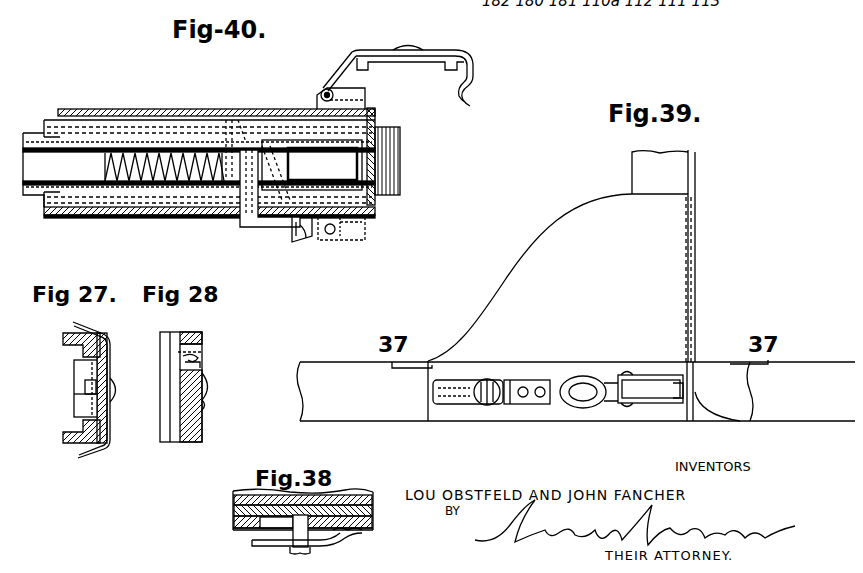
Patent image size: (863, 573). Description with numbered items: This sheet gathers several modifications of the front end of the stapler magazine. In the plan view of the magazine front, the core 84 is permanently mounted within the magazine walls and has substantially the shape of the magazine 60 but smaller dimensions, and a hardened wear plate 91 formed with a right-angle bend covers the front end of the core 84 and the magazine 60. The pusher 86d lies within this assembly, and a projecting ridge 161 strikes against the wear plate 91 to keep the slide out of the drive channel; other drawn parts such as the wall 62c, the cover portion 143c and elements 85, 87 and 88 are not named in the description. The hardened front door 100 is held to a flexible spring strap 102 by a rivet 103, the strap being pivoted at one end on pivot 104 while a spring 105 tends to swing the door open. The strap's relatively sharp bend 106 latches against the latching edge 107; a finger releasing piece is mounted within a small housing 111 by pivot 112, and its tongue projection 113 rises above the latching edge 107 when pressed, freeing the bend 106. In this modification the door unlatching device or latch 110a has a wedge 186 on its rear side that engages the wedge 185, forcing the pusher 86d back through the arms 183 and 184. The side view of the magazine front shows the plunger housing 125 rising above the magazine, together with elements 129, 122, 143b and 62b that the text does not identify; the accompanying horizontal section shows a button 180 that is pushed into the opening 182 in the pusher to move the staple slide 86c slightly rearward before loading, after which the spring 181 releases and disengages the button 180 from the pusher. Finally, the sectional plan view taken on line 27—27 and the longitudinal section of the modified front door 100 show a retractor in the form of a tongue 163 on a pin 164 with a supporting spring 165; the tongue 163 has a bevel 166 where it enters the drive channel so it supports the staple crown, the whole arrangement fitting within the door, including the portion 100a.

In FIG. 40, the core 84 is at (30, 133).
In FIG. 38, the core 84 is at (234, 497).
In FIG. 40, the housing member 62c is at (72, 127).
In FIG. 40, the hatched cover plate 143c is at (150, 111).
In FIG. 40, the pusher 86d is at (226, 140).
In FIG. 40, the pivot pin 88 is at (238, 120).
In FIG. 40, the projecting ridge 161 is at (312, 155).
In FIG. 40, the flexible spring strap 102 is at (340, 78).
In FIG. 27, the flexible spring strap 102 is at (103, 450).
In FIG. 28, the flexible spring strap 102 is at (204, 406).
In FIG. 40, the pivot 104 is at (322, 92).
In FIG. 40, the spring 105 is at (336, 86).
In FIG. 40, the rivet 103 is at (408, 47).
In FIG. 27, the rivet 103 is at (114, 396).
In FIG. 28, the rivet 103 is at (208, 390).
In FIG. 40, the front door 100 is at (437, 58).
In FIG. 39, the front door 100 is at (745, 390).
In FIG. 40, the sharp bend 106 is at (466, 103).
In FIG. 40, the threaded end 85 is at (402, 156).
In FIG. 40, the wear plate 91 is at (398, 184).
In FIG. 39, the wear plate 91 is at (730, 412).
In FIG. 40, the spring 87 is at (137, 173).
In FIG. 40, the arm 183 is at (245, 222).
In FIG. 40, the wedge 185 is at (290, 232).
In FIG. 40, the wedge 186 is at (300, 240).
In FIG. 40, the arm 184 is at (306, 245).
In FIG. 40, the pivot 112 is at (330, 235).
In FIG. 39, the pivot 112 is at (625, 405).
In FIG. 40, the tongue projection 113 is at (362, 226).
In FIG. 39, the tongue projection 113 is at (676, 398).
In FIG. 40, the latching edge 107 is at (370, 239).
In FIG. 39, the latching edge 107 is at (694, 405).
In FIG. 40, the door unlatching device 110a is at (355, 238).
In FIG. 39, the door unlatching device 110a is at (585, 408).
In FIG. 39, the tab 129 is at (634, 172).
In FIG. 39, the edge flange 122 is at (698, 178).
In FIG. 39, the plunger housing 125 is at (698, 242).
In FIG. 39, the curved panel 143b is at (520, 294).
In FIG. 38, the curved panel 143b is at (252, 530).
In FIG. 39, the housing wall 62b is at (320, 374).
In FIG. 38, the housing wall 62b is at (236, 522).
In FIG. 39, the magazine 60 is at (341, 421).
In FIG. 38, the magazine 60 is at (363, 491).
In FIG. 39, the spring 181 is at (458, 404).
In FIG. 38, the spring 181 is at (346, 533).
In FIG. 39, the button 180 is at (493, 405).
In FIG. 38, the button 180 is at (306, 551).
In FIG. 39, the small housing 111 is at (650, 403).
In FIG. 27, the clip body 100a is at (70, 432).
In FIG. 28, the clip body 100a is at (195, 422).
In FIG. 27, the tongue 163 is at (80, 373).
In FIG. 28, the tongue 163 is at (200, 344).
In FIG. 27, the bevel 166 is at (74, 406).
In FIG. 28, the bevel 166 is at (180, 347).
In FIG. 28, the section line 27— 27 is at (202, 353).
In FIG. 28, the supporting spring 165 is at (182, 360).
In FIG. 28, the pin 164 is at (200, 369).
In FIG. 38, the staple slide 86c is at (236, 509).
In FIG. 38, the opening 182 is at (292, 530).